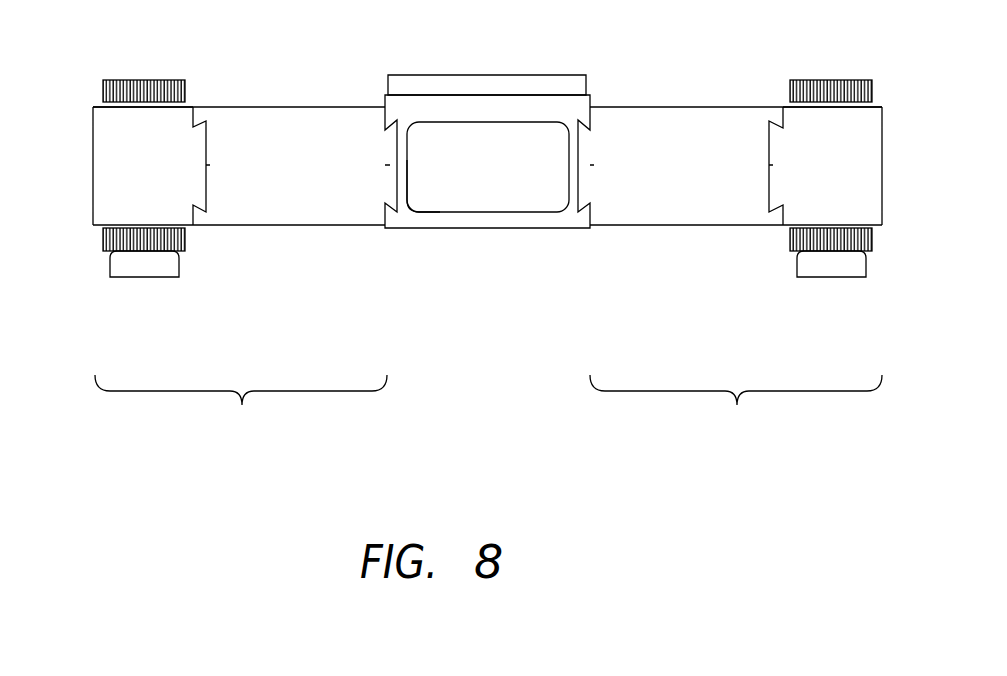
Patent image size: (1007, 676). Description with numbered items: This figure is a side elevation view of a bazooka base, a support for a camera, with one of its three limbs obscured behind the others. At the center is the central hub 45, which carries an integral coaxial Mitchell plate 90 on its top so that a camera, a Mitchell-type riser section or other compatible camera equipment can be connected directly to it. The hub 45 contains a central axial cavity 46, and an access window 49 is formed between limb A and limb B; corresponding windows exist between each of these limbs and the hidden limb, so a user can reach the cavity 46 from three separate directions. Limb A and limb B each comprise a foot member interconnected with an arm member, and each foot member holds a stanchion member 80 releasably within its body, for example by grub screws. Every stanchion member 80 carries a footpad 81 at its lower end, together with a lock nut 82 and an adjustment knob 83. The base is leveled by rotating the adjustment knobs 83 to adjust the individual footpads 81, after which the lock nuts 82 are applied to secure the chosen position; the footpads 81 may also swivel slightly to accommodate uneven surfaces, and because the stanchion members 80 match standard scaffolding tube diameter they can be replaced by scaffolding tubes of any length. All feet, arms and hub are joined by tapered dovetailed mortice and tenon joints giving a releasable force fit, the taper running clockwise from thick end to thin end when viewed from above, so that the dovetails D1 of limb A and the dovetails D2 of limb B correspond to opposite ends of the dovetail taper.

The central hub 45 is at (487, 220).
The Mitchell plate 90 is at (491, 85).
The central axial cavity 46 is at (513, 135).
The access window 49 is at (423, 193).
The adjustment knob 83 is at (142, 80).
The lock nut 82 is at (103, 240).
The footpad 81 is at (143, 277).
The stanchion member 80 is at (105, 103).
The dovetails of limb A D1 is at (206, 165).
The dovetails of limb B D2 is at (590, 165).
The limb A is at (241, 406).
The limb B is at (736, 406).